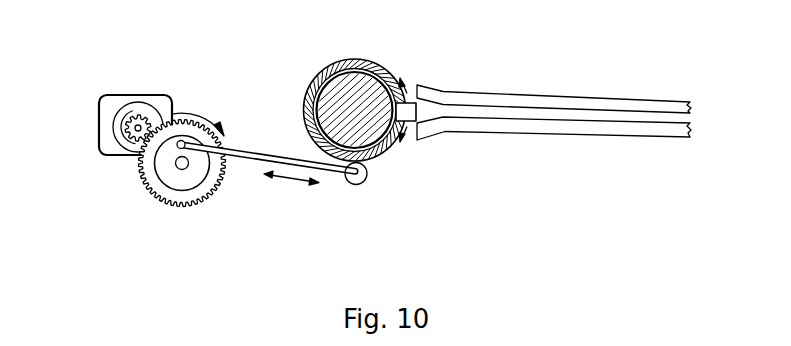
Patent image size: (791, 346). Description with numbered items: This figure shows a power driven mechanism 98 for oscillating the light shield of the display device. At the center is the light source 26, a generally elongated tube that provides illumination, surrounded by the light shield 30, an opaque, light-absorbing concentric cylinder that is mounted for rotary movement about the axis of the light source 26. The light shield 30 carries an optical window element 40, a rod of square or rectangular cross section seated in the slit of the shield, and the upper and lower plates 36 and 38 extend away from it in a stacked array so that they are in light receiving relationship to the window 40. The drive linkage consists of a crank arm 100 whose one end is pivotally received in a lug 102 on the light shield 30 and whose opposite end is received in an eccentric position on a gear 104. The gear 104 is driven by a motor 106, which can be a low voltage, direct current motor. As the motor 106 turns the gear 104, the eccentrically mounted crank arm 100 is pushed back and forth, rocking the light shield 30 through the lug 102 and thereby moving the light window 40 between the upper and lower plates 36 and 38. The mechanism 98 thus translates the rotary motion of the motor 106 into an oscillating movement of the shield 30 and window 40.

The light source 26 is at (338, 98).
The light shield 30 is at (351, 59).
The upper plate 36 is at (613, 102).
The lower plate 38 is at (620, 130).
The optical window element 40 is at (418, 107).
The power driven mechanism 98 is at (113, 181).
The crank arm 100 is at (327, 176).
The lug 102 is at (363, 181).
The gear 104 is at (180, 206).
The motor 106 is at (100, 128).